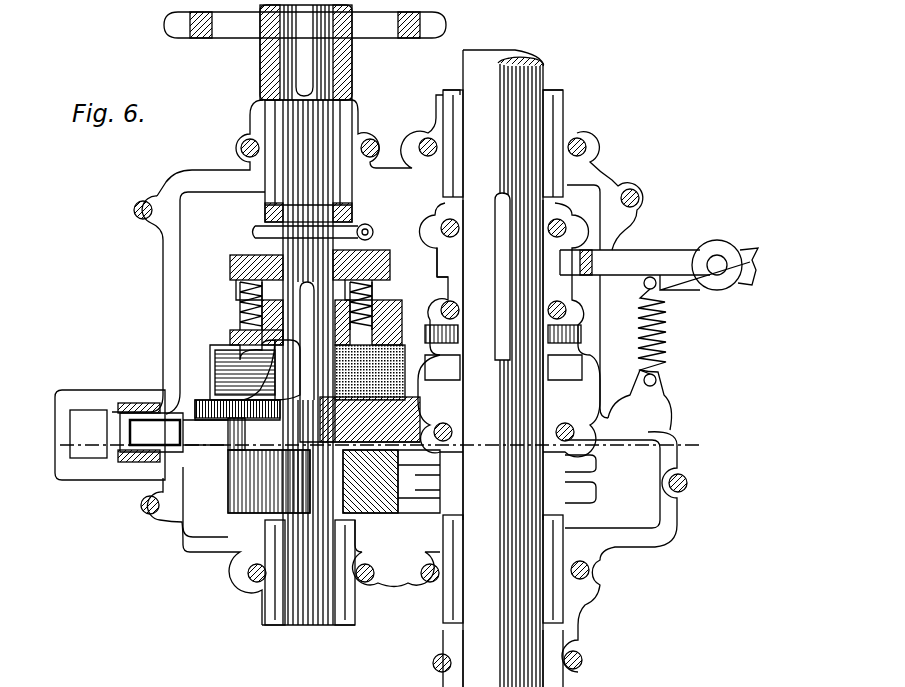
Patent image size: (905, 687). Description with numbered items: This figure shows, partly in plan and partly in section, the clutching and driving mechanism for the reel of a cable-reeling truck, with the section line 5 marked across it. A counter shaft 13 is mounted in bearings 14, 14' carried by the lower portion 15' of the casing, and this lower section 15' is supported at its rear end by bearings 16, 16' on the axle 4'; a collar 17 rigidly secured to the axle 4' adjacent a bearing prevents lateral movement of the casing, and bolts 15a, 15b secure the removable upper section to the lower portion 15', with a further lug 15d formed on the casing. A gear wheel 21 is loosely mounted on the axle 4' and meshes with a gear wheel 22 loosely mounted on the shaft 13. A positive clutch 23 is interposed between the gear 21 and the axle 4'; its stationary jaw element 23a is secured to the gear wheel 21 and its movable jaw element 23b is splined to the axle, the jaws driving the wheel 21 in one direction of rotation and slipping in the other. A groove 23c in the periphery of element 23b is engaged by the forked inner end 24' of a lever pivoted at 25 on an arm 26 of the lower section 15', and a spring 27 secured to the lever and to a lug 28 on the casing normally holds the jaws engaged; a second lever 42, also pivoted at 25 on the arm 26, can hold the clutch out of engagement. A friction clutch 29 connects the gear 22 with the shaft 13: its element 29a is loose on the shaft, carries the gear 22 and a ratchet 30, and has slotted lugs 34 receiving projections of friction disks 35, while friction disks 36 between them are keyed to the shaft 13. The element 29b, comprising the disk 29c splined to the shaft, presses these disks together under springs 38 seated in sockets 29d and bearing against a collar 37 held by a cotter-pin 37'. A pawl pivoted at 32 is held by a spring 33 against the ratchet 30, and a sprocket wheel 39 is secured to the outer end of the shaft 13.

The axle 4' is at (519, 368).
The section line 5 is at (60, 472).
The counter shaft 13 is at (318, 118).
The bearing 14 is at (286, 572).
The bearing 14' is at (300, 158).
The lower portion of casing 15' is at (394, 402).
The bolt 15a is at (640, 200).
The bolt 15b is at (136, 206).
The housing lug 15d is at (690, 488).
The bearing 16 is at (527, 569).
The bearing 16' is at (528, 143).
The collar 17 is at (565, 680).
The gear wheel 21 is at (484, 481).
The gear wheel 22 is at (228, 512).
The positive clutch 23 is at (509, 330).
The stationary jaw element 23a is at (458, 390).
The movable jaw element 23b is at (448, 290).
The groove 23c is at (440, 265).
The forked inner end of lever 24' is at (635, 244).
The pivot 25 is at (717, 258).
The arm 26 is at (682, 285).
The spring 27 is at (668, 346).
The lug 28 is at (665, 394).
The friction clutch 29 is at (270, 370).
The clutch element 29a is at (348, 426).
The clutch element 29b is at (288, 252).
The disk 29c is at (253, 340).
The socket 29d is at (242, 300).
The ratchet 30 is at (230, 452).
The pawl pivot 32 is at (142, 408).
The spring 33 is at (135, 468).
The lug 34 is at (243, 380).
The friction disk 35 is at (404, 345).
The friction disk 36 is at (400, 372).
The collar 37 is at (241, 270).
The cotter-pin 37' is at (330, 230).
The spring 38 is at (375, 300).
The sprocket wheel 39 is at (398, 22).
The lever 42 is at (752, 252).